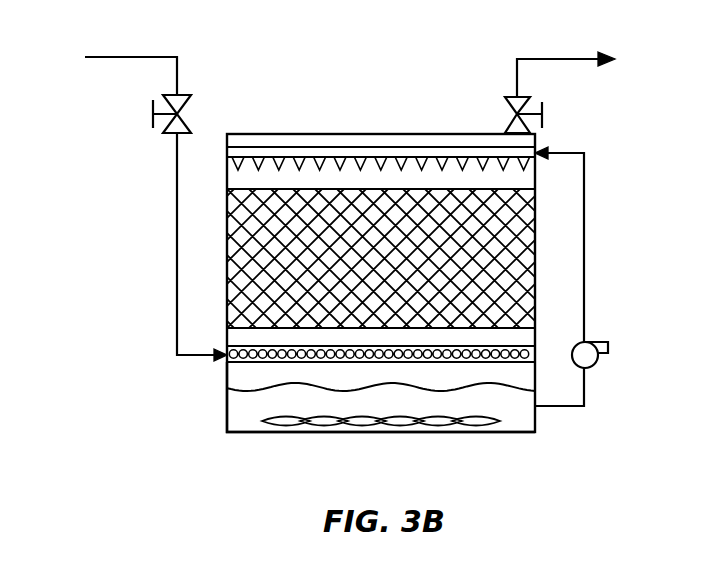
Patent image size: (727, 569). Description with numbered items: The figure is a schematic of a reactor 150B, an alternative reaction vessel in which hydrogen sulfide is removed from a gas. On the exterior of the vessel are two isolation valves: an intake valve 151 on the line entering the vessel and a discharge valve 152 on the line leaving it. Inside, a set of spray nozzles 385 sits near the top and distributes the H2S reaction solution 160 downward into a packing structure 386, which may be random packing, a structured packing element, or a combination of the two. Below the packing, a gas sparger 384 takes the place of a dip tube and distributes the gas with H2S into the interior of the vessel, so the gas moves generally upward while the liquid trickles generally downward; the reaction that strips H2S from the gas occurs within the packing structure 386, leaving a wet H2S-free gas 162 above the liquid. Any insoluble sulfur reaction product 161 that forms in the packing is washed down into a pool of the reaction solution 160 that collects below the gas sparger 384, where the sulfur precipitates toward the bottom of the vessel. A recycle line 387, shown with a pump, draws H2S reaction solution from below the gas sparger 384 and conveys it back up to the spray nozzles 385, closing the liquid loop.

The reactor 150B is at (255, 30).
The intake valve 151 is at (153, 108).
The discharge valve 152 is at (542, 109).
The spray nozzles 385 is at (400, 158).
The packing structure 386 is at (404, 268).
The gas sparger 384 is at (504, 362).
The wet H2S-free gas 162 is at (240, 373).
The H2S reaction solution 160 is at (240, 412).
The insoluble sulfur reaction product 161 is at (433, 432).
The recycle line 387 is at (600, 360).